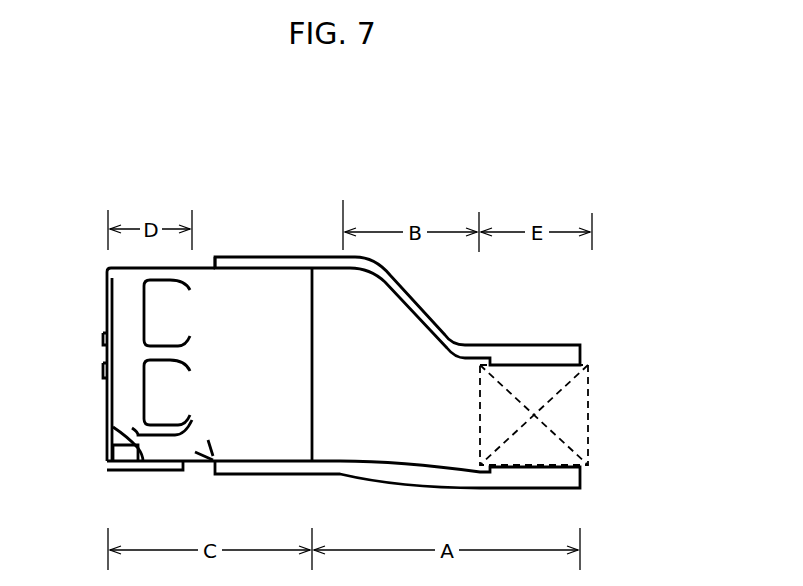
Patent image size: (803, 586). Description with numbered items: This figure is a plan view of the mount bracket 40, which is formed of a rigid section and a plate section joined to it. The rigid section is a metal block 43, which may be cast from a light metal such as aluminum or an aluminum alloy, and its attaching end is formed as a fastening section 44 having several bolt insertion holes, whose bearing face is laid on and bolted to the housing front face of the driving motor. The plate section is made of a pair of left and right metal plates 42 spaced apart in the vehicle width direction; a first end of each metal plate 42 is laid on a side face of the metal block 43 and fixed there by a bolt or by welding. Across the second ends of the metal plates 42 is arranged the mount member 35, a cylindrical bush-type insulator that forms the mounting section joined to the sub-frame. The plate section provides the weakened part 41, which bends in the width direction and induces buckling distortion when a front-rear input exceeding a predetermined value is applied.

The mount member 35 is at (588, 373).
The mount bracket 40 is at (277, 251).
The weakened part 41 is at (414, 316).
The metal plate 42 is at (322, 257).
The metal block 43 is at (202, 266).
The fastening section 44 is at (120, 350).